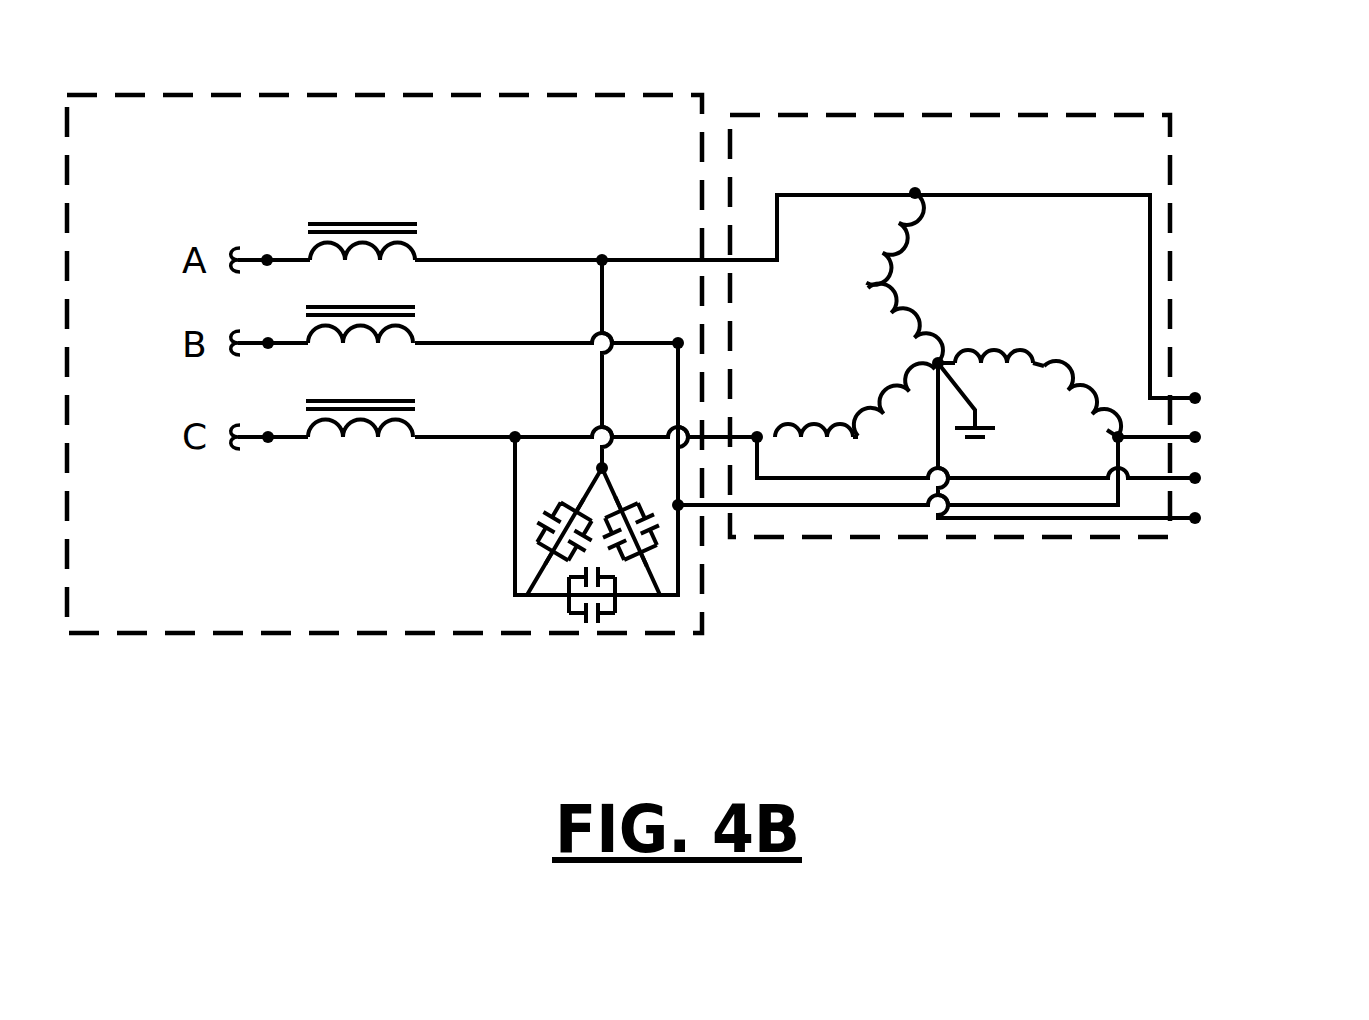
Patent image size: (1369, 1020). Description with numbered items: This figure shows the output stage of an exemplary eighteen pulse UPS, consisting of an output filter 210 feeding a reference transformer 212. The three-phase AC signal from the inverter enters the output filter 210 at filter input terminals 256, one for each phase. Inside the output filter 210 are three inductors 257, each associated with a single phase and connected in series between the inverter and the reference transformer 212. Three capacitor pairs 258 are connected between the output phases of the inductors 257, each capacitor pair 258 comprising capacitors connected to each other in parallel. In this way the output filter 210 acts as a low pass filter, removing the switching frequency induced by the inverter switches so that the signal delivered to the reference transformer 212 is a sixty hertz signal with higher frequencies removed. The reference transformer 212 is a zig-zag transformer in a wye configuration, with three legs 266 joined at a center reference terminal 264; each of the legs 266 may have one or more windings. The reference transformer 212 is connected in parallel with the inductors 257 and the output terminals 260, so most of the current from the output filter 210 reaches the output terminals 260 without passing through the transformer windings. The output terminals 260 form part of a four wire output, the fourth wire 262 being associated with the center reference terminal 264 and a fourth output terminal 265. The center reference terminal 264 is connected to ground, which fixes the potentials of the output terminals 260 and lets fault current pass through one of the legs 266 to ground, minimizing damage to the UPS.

The output filter 210 is at (466, 96).
The reference transformer 212 is at (1080, 114).
The filter input terminals 256 is at (270, 254).
The inductors 257 is at (378, 224).
The capacitor pairs 258 is at (534, 529).
The output terminals 260 is at (1200, 393).
The fourth wire 262 is at (1046, 522).
The center reference terminal 264 is at (948, 358).
The fourth output terminal 265 is at (1204, 522).
The legs 266 is at (862, 286).